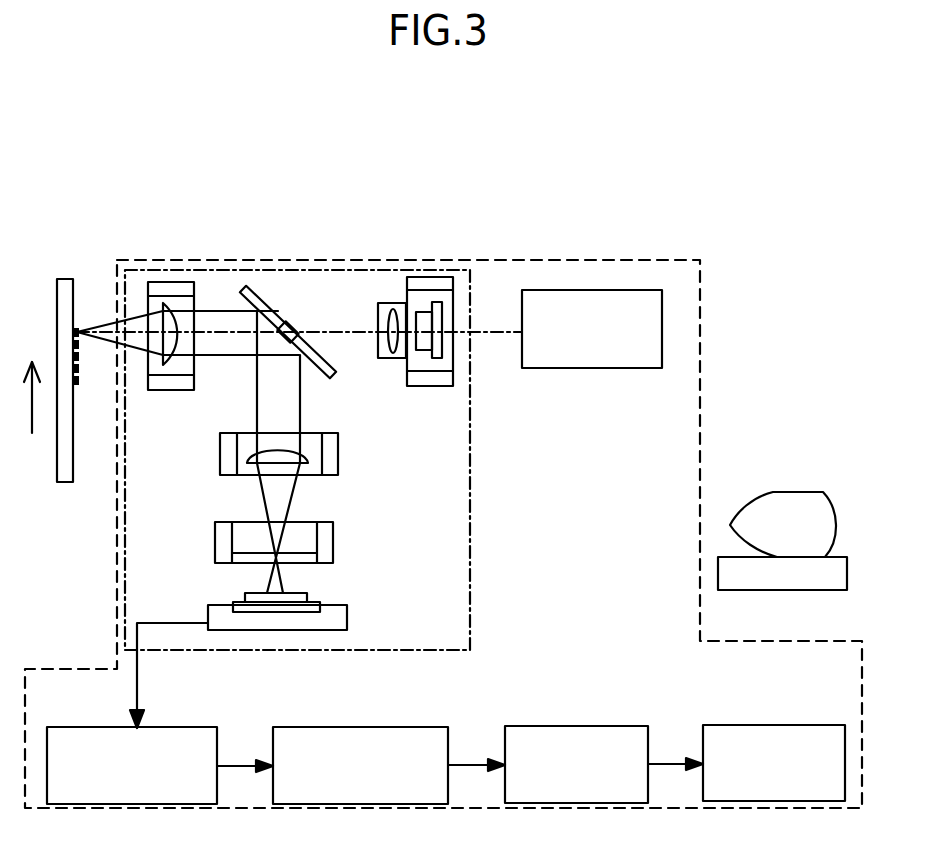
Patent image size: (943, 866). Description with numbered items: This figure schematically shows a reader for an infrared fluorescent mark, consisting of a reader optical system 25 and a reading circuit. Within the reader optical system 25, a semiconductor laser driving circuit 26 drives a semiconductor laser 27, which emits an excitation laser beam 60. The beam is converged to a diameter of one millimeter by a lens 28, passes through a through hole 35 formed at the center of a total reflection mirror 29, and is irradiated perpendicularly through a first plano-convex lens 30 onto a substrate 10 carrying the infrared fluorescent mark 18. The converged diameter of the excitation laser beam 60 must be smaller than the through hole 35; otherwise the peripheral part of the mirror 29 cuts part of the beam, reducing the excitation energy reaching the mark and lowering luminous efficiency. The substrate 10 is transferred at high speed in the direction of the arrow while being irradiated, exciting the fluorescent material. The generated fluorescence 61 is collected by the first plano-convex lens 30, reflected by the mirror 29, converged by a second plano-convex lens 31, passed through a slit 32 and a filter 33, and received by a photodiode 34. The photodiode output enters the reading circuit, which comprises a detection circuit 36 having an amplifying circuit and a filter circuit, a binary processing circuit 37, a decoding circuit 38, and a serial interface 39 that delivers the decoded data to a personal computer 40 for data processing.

The substrate 10 is at (73, 457).
The servo marks / tracks 18 is at (80, 383).
The reader optical system 25 is at (630, 503).
The semiconductor laser driving circuit 26 is at (587, 290).
The semiconductor laser 27 is at (423, 340).
The lens 28 is at (398, 303).
The total reflection mirror 29 is at (250, 287).
The plano-convex lens 30 is at (178, 303).
The plano-convex lens 31 is at (300, 462).
The slit 32 is at (300, 552).
The filter 33 is at (310, 598).
The photodiode 34 is at (307, 613).
The through hole 35 is at (292, 323).
The detection circuit 36 is at (97, 727).
The binary processing circuit 37 is at (325, 727).
The decoding circuit 38 is at (563, 726).
The serial interface 39 is at (757, 725).
The personal computer 40 is at (797, 492).
The excitation laser beam 60 is at (334, 330).
The reflected light beam 61 is at (188, 452).